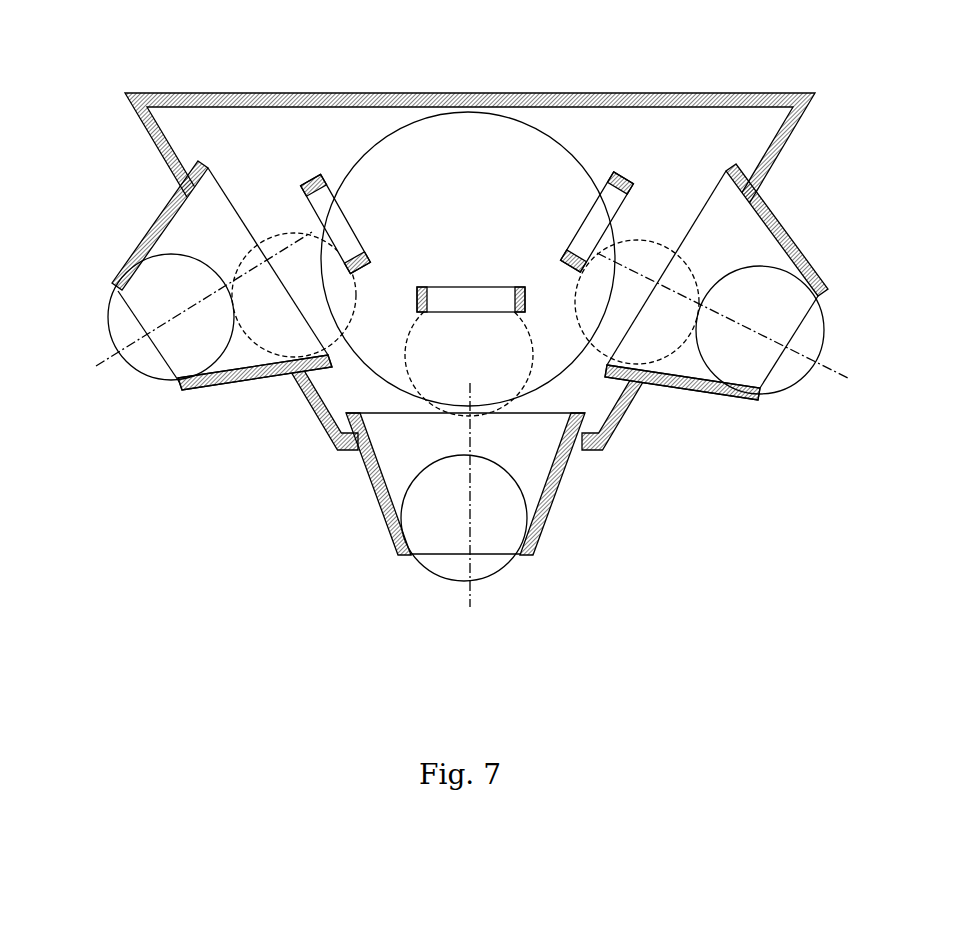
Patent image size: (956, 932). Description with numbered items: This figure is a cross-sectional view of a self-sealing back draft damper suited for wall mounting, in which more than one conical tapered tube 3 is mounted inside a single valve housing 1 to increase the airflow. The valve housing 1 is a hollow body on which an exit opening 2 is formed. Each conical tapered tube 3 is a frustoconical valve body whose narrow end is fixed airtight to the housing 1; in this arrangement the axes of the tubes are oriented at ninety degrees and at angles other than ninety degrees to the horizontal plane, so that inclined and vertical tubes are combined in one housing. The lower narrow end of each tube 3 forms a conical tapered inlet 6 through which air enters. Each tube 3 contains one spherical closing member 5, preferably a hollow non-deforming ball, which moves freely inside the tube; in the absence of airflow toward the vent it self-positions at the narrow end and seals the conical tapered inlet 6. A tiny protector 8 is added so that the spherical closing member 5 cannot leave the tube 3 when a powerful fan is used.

The valve housing 1 is at (258, 103).
The exit opening 2 is at (398, 158).
The conical tapered tube 3 is at (272, 372).
The spherical closing member 5 is at (122, 324).
The conical tapered inlet 6 is at (182, 388).
The tiny protector 8 is at (592, 213).